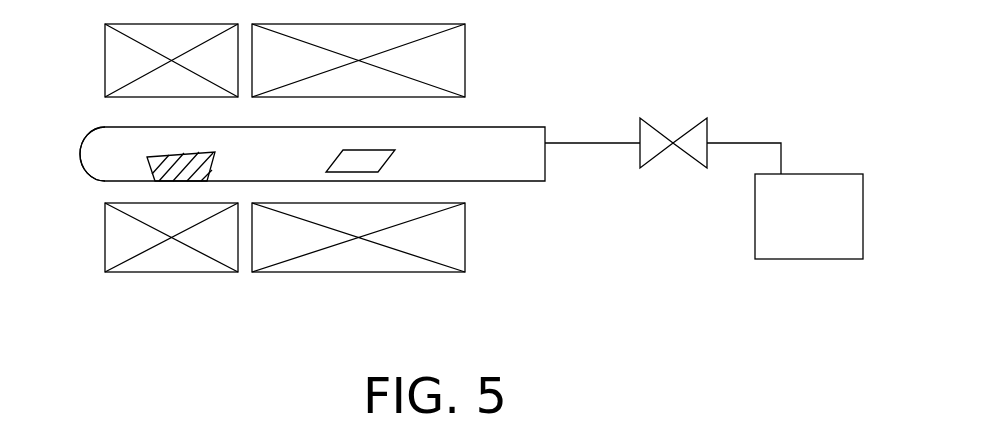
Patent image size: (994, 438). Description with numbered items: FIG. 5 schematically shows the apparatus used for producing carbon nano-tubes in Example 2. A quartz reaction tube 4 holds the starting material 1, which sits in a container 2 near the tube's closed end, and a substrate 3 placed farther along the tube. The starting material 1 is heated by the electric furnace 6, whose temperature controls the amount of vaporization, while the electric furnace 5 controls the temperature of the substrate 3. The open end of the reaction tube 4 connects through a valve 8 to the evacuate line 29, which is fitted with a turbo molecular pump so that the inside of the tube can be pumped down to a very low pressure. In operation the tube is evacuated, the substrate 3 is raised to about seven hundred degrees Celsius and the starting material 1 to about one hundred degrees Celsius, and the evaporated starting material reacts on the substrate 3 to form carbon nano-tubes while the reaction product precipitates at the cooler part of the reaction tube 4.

The starting material 1 is at (168, 155).
The container 2 is at (143, 157).
The substrate 3 is at (382, 160).
The reaction tube 4 is at (518, 182).
The electric furnace 5 is at (370, 264).
The electric furnace 6 is at (180, 264).
The valve 8 is at (700, 118).
The evacuate line 29 is at (807, 260).